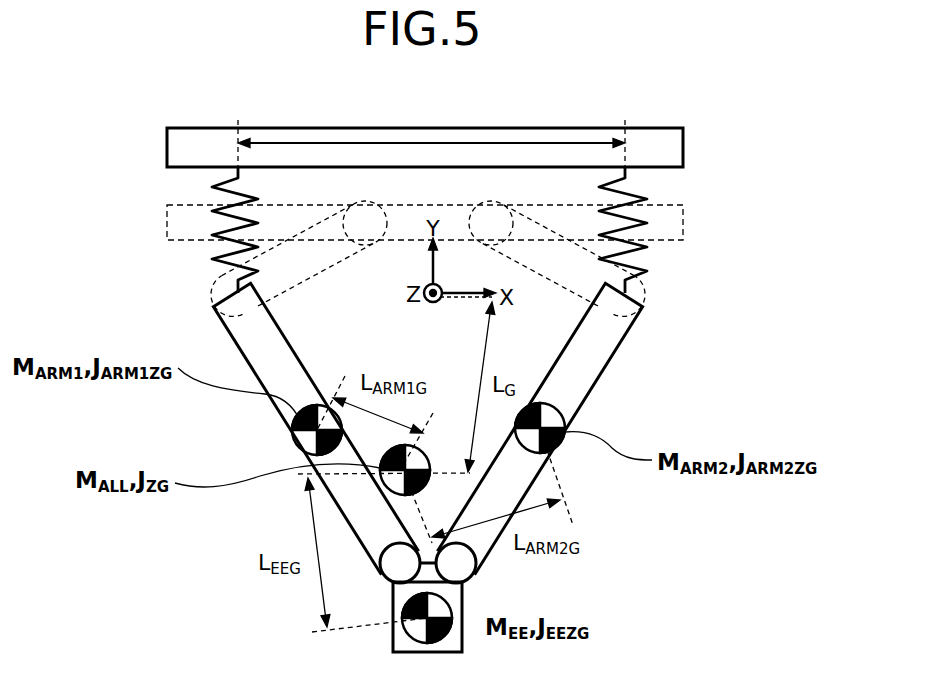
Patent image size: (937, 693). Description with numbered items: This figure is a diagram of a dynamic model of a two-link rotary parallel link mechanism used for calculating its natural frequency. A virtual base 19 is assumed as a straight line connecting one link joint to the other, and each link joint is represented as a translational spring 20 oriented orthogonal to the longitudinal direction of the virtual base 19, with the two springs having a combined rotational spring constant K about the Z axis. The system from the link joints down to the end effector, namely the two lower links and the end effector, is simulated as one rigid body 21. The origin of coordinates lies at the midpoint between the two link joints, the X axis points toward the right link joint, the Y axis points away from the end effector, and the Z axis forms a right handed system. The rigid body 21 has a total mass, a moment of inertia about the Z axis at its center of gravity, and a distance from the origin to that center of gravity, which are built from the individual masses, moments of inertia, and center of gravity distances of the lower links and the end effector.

The virtual base 19 is at (683, 145).
The translational spring 20 is at (217, 233).
The rigid body 21 is at (639, 352).